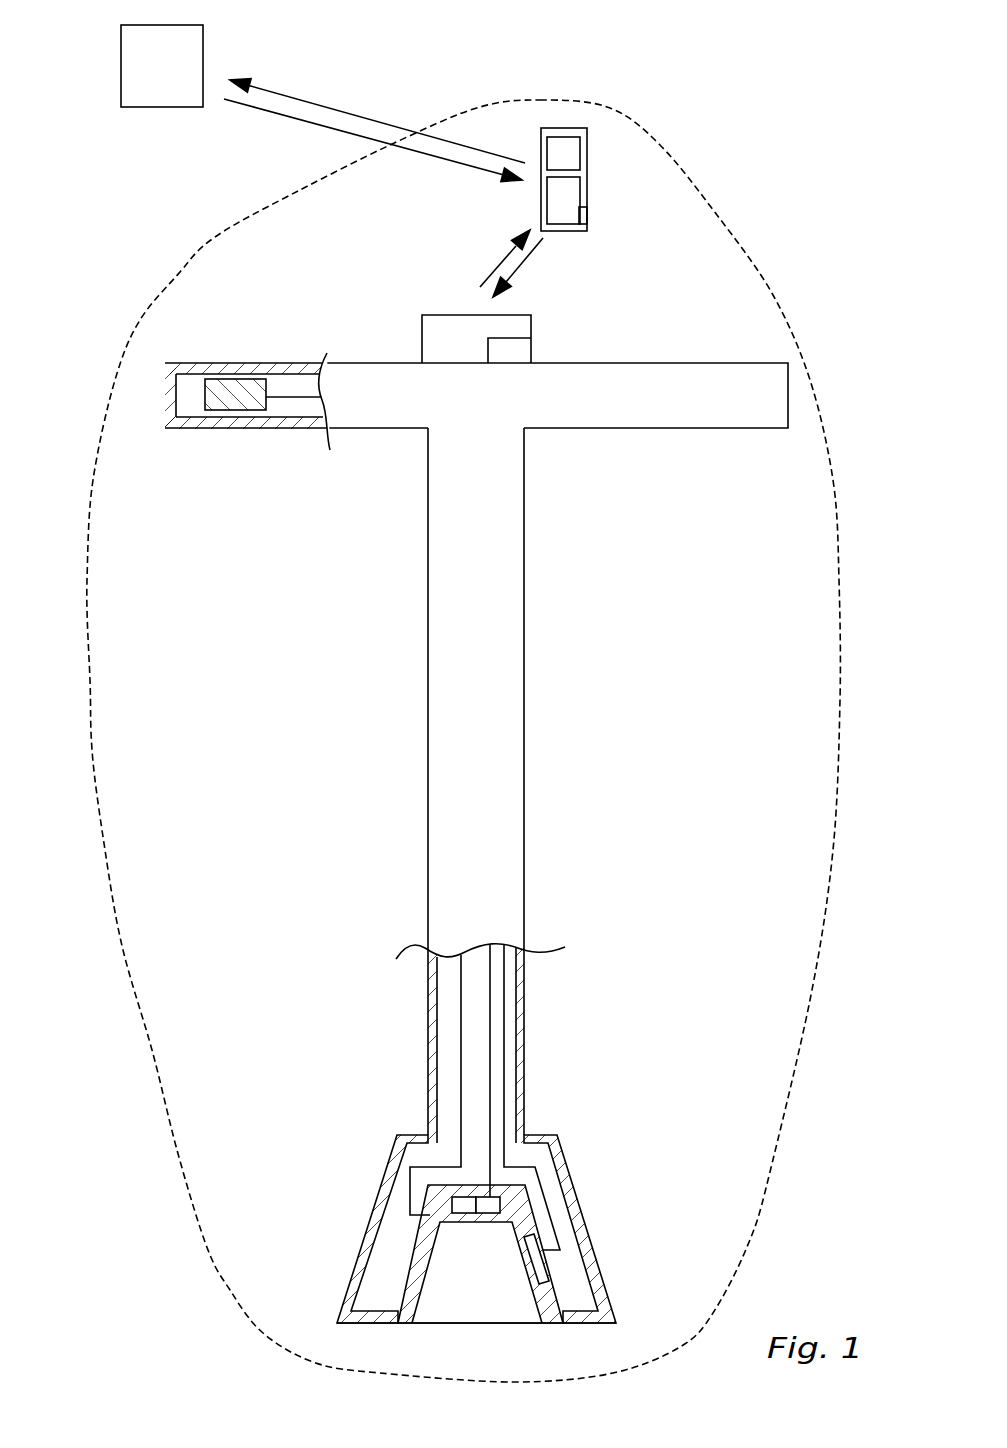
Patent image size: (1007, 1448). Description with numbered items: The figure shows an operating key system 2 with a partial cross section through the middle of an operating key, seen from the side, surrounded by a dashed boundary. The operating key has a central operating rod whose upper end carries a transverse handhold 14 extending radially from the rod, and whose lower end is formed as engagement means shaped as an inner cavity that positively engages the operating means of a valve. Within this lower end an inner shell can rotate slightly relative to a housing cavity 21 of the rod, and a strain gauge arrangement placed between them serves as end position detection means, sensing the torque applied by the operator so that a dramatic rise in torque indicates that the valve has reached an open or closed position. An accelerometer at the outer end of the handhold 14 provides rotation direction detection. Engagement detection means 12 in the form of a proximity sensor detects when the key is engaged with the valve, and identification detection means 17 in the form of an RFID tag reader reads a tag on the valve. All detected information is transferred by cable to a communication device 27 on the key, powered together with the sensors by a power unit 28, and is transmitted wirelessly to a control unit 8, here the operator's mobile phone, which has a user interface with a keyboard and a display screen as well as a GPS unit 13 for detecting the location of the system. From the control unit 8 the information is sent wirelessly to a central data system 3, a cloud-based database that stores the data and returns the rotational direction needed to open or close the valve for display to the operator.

The operating key system 2 is at (188, 263).
The central data system 3 is at (149, 75).
The control unit 8 is at (588, 157).
The engagement detection means 12 is at (492, 1205).
The GPS unit 13 is at (583, 217).
The handhold 14 is at (678, 405).
The identification detection means 17 is at (463, 1203).
The housing cavity 21 is at (413, 1261).
The communication device 27 is at (452, 335).
The power unit 28 is at (513, 348).